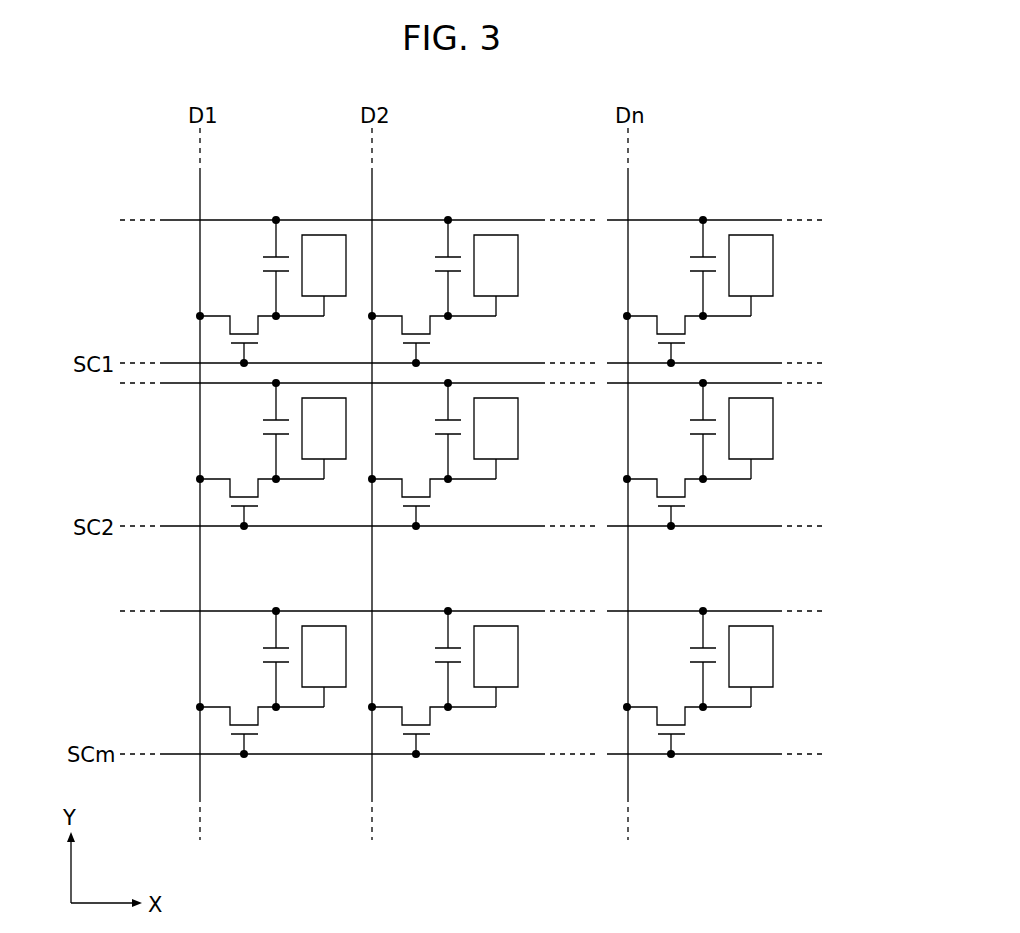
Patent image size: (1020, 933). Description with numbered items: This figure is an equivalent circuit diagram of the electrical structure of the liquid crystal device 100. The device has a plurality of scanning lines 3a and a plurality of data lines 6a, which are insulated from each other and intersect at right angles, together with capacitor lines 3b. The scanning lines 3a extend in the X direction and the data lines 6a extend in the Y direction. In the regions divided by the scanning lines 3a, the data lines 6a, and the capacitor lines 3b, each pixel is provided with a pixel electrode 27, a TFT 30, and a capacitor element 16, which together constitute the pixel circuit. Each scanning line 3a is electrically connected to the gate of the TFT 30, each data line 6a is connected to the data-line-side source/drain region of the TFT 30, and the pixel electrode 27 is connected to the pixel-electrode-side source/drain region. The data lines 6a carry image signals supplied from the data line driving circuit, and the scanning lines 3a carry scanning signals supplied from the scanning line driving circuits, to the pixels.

The liquid crystal device 100 is at (695, 88).
The data line 6a is at (201, 195).
The capacitor line 3b is at (770, 218).
The scanning line 3a is at (773, 362).
The pixel electrode 27 is at (764, 265).
The capacitor element 16 is at (262, 263).
The TFT 30 is at (264, 338).